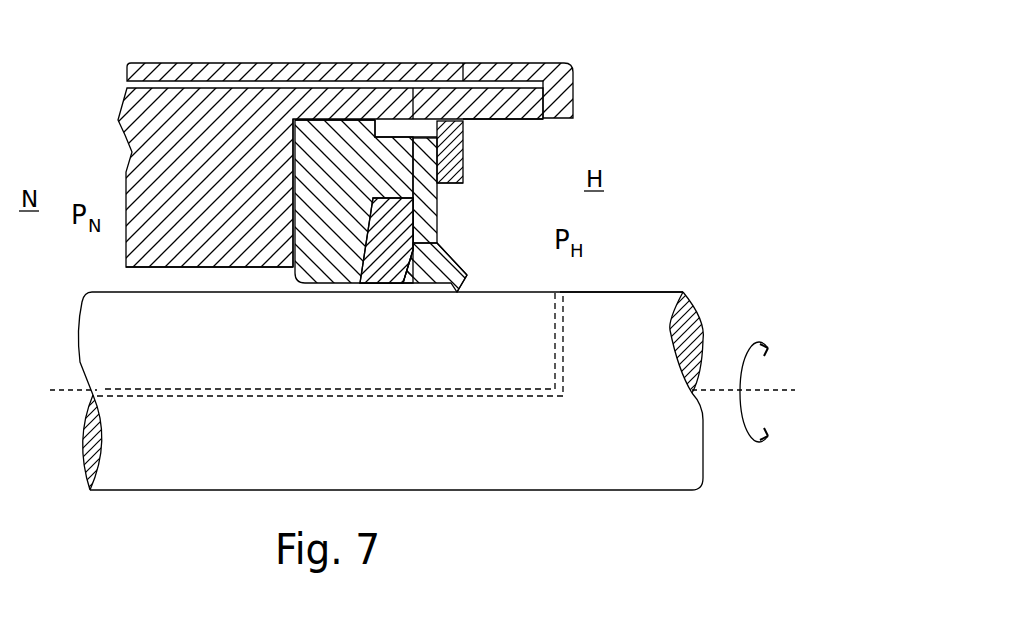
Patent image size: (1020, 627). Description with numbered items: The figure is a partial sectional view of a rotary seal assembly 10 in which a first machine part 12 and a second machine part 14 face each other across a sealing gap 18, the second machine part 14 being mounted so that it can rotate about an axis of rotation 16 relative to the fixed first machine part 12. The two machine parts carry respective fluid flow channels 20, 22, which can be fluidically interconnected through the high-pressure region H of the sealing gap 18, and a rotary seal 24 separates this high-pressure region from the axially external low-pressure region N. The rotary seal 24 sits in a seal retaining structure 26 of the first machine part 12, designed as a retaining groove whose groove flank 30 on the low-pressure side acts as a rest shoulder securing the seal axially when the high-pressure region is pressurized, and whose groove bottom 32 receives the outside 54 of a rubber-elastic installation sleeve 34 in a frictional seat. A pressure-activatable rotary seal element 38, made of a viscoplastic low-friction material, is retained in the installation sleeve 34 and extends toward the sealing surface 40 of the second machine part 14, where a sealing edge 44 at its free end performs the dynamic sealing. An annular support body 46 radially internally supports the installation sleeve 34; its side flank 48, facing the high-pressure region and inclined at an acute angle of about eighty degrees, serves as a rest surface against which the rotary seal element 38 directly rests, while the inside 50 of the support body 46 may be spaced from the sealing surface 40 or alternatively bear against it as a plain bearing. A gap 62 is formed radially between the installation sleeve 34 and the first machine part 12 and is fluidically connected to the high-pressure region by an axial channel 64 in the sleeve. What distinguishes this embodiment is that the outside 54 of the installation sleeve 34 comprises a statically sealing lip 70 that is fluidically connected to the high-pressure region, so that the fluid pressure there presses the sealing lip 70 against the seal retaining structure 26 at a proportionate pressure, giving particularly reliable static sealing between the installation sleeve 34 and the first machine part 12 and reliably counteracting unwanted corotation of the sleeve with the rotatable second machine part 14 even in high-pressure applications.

The rotary seal assembly 10 is at (677, 167).
The first machine part 12 is at (125, 125).
The second machine part 14 is at (482, 469).
The axis of rotation 16 is at (720, 390).
The sealing gap 18 is at (195, 280).
The fluid flow channel 20 is at (492, 67).
The fluid flow channel 22 is at (113, 387).
The rotary seal 24 is at (458, 199).
The seal retaining structure 26 is at (500, 128).
The groove flank 30 is at (293, 163).
The groove bottom 32 is at (310, 133).
The installation sleeve 34 is at (333, 120).
The rotary seal element 38 is at (430, 233).
The sealing surface 40 is at (645, 291).
The sealing edge 44 is at (448, 283).
The support body 46 is at (401, 250).
The side flank 48 is at (440, 253).
The inside 50 is at (373, 282).
The outside 54 is at (467, 67).
The gap 62 is at (433, 67).
The axial channel 64 is at (467, 125).
The statically sealing lip 70 is at (363, 120).